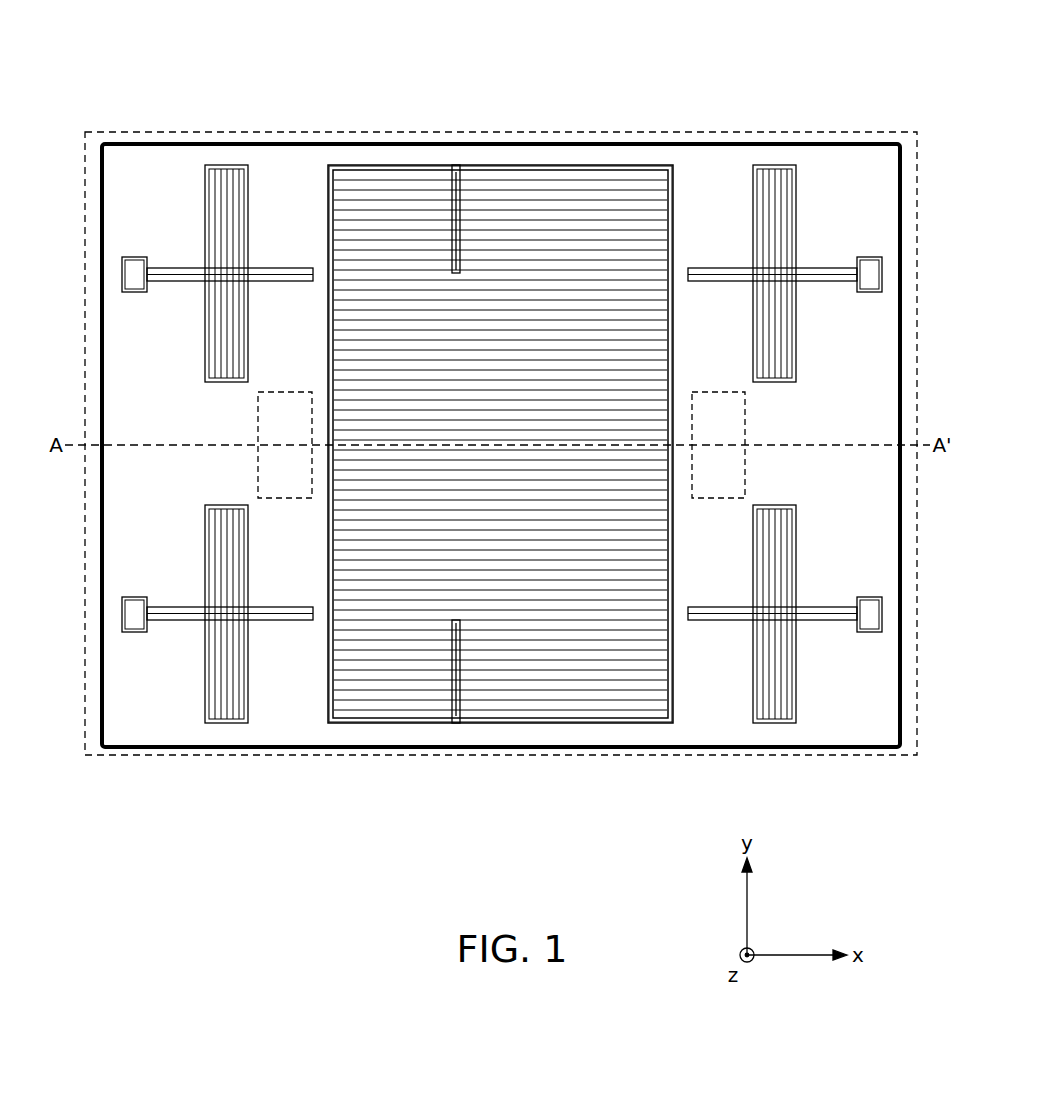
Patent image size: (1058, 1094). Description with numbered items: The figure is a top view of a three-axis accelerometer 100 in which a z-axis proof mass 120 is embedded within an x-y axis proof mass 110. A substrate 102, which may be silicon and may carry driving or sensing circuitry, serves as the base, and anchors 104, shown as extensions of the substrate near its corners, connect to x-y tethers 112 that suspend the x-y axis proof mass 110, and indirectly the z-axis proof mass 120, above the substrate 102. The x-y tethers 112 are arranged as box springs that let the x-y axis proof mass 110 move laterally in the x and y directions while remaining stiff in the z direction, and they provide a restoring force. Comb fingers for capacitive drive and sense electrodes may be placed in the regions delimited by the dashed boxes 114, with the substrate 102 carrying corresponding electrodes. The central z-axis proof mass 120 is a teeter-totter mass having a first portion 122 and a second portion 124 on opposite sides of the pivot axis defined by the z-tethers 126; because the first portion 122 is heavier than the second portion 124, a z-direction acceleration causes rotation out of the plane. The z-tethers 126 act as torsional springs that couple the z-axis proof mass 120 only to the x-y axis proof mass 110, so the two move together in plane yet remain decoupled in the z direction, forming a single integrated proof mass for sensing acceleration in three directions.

The three-axis accelerometer 100 is at (256, 88).
The substrate 102 is at (897, 757).
The anchors 104 is at (135, 272).
The x-y axis proof mass 110 is at (720, 230).
The x-y tethers 112 is at (225, 230).
The boxes 114 is at (258, 440).
The z-axis proof mass 120 is at (488, 402).
The first portion 122 is at (637, 230).
The second portion 124 is at (357, 230).
The z-tethers 126 is at (455, 178).